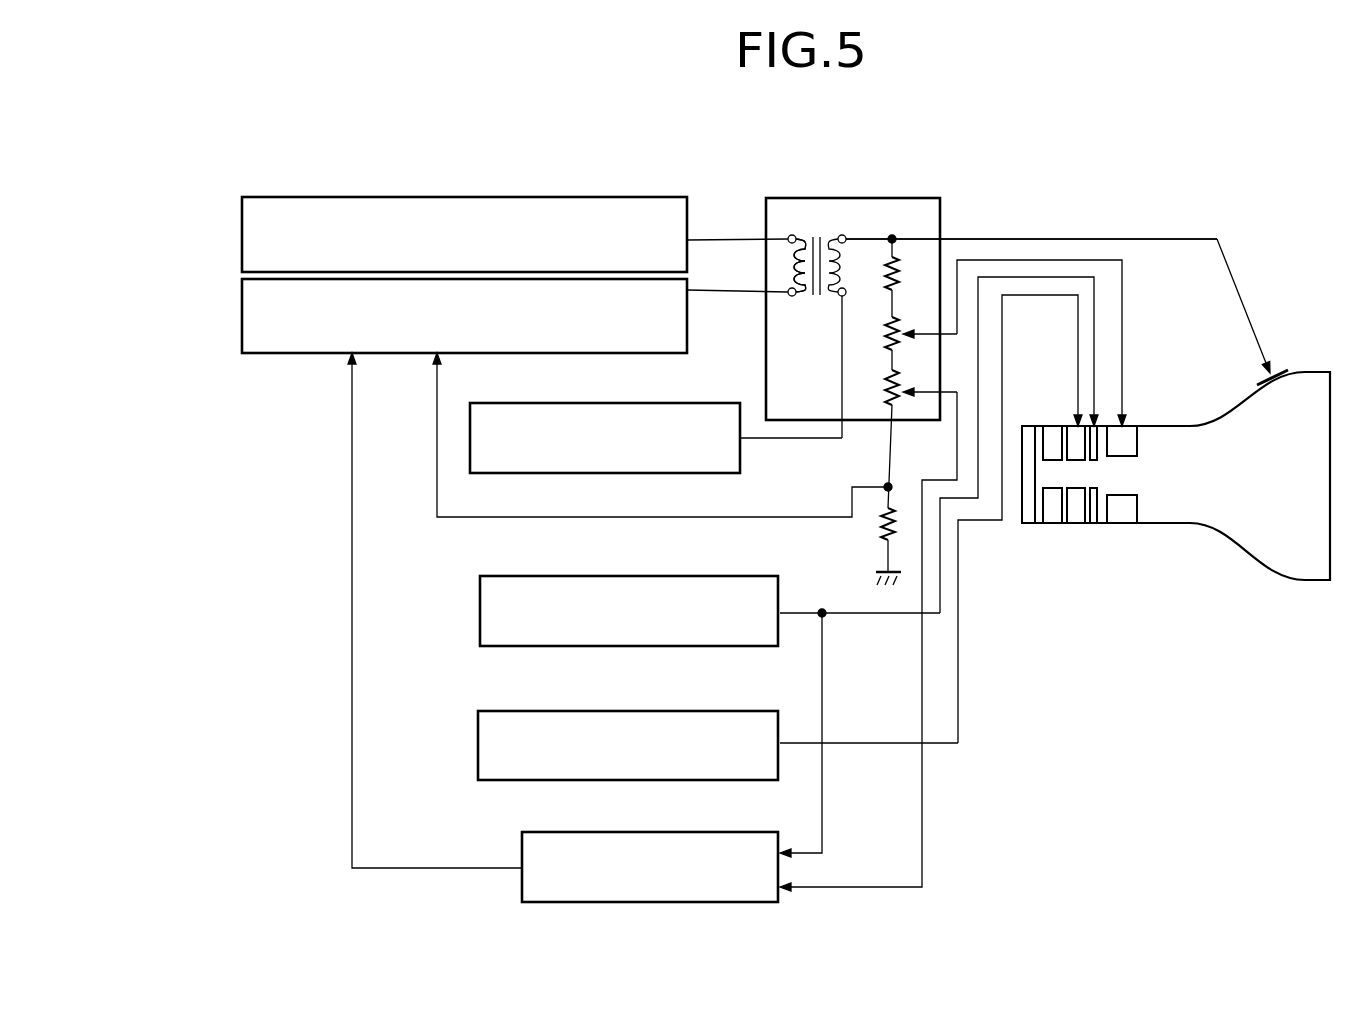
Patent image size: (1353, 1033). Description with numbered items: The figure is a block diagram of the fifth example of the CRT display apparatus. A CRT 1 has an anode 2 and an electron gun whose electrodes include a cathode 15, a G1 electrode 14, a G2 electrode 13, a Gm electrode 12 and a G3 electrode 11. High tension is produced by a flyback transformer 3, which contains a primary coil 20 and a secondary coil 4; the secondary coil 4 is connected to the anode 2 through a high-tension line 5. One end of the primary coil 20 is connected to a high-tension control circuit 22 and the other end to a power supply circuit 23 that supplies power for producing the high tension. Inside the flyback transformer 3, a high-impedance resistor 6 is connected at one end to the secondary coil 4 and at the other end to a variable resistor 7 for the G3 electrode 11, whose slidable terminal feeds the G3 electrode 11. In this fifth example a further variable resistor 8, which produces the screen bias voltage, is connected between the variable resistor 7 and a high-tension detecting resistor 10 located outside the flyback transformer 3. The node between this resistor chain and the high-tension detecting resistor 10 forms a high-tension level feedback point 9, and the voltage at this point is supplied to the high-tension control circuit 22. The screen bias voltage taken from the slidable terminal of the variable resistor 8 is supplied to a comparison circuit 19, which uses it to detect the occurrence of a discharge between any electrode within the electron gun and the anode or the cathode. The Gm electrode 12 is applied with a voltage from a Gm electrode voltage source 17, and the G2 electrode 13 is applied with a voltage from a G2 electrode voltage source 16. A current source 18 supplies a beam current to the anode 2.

The CRT 1 is at (1262, 560).
The anode 2 is at (1277, 365).
The flyback transformer 3 is at (906, 198).
The secondary coil 4 is at (833, 236).
The high-tension line 5 is at (1078, 239).
The high-impedance resistor 6 is at (899, 280).
The variable resistor 7 is at (897, 334).
The variable resistor 8 is at (897, 390).
The high-tension level feedback point 9 is at (886, 486).
The high-tension detecting resistor 10 is at (876, 527).
The G3 electrode 11 is at (1124, 525).
The Gm electrode 12 is at (1093, 525).
The G2 electrode 13 is at (1075, 525).
The G1 electrode 14 is at (1053, 525).
The cathode 15 is at (1022, 526).
The G2 electrode voltage source 16 is at (503, 711).
The Gm electrode voltage source 17 is at (503, 576).
The current source 18 is at (614, 403).
The comparison circuit 19 is at (522, 850).
The primary coil 20 is at (782, 268).
The high-tension control circuit 22 is at (687, 321).
The power supply circuit 23 is at (481, 197).